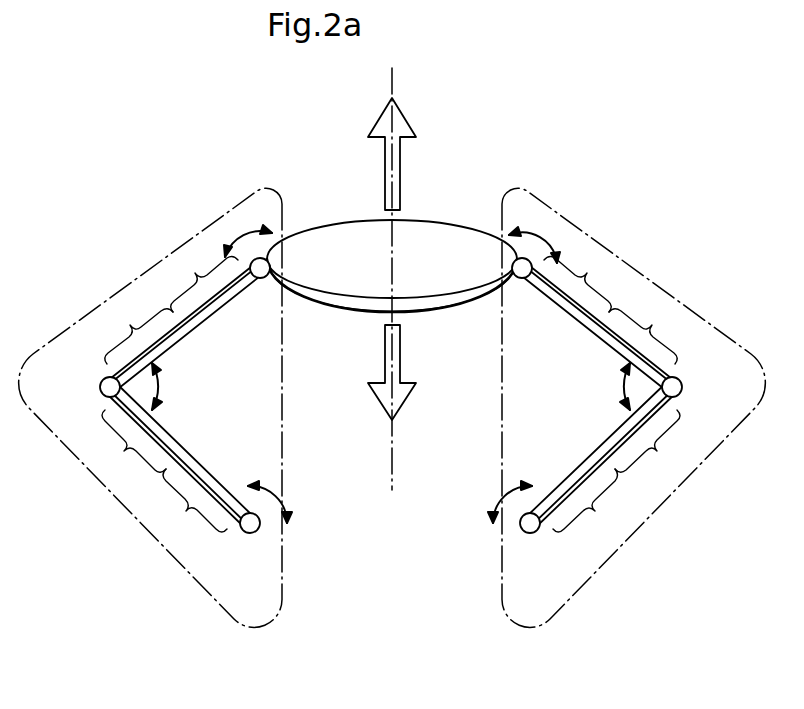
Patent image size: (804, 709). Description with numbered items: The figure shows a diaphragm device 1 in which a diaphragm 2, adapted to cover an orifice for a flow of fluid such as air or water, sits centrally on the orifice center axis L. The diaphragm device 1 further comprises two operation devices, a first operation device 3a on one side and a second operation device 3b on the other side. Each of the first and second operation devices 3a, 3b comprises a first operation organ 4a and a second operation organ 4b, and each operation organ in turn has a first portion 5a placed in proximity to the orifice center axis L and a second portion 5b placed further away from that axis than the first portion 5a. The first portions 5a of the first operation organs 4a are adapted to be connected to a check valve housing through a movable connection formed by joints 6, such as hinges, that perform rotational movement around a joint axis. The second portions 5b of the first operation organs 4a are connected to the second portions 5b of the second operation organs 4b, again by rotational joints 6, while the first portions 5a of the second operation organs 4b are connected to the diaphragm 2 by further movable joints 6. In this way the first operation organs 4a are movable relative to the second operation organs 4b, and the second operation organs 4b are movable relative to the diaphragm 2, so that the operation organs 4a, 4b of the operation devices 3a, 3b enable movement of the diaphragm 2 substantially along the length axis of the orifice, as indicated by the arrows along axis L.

The diaphragm device 1 is at (267, 156).
The diaphragm 2 is at (366, 273).
The first operation device 3a is at (657, 255).
The second operation device 3b is at (120, 270).
The first operation organ 4a is at (195, 451).
The second operation organ 4b is at (190, 326).
The first portion 5a is at (390, 394).
The second portion 5b is at (391, 391).
The joint 6 is at (263, 279).